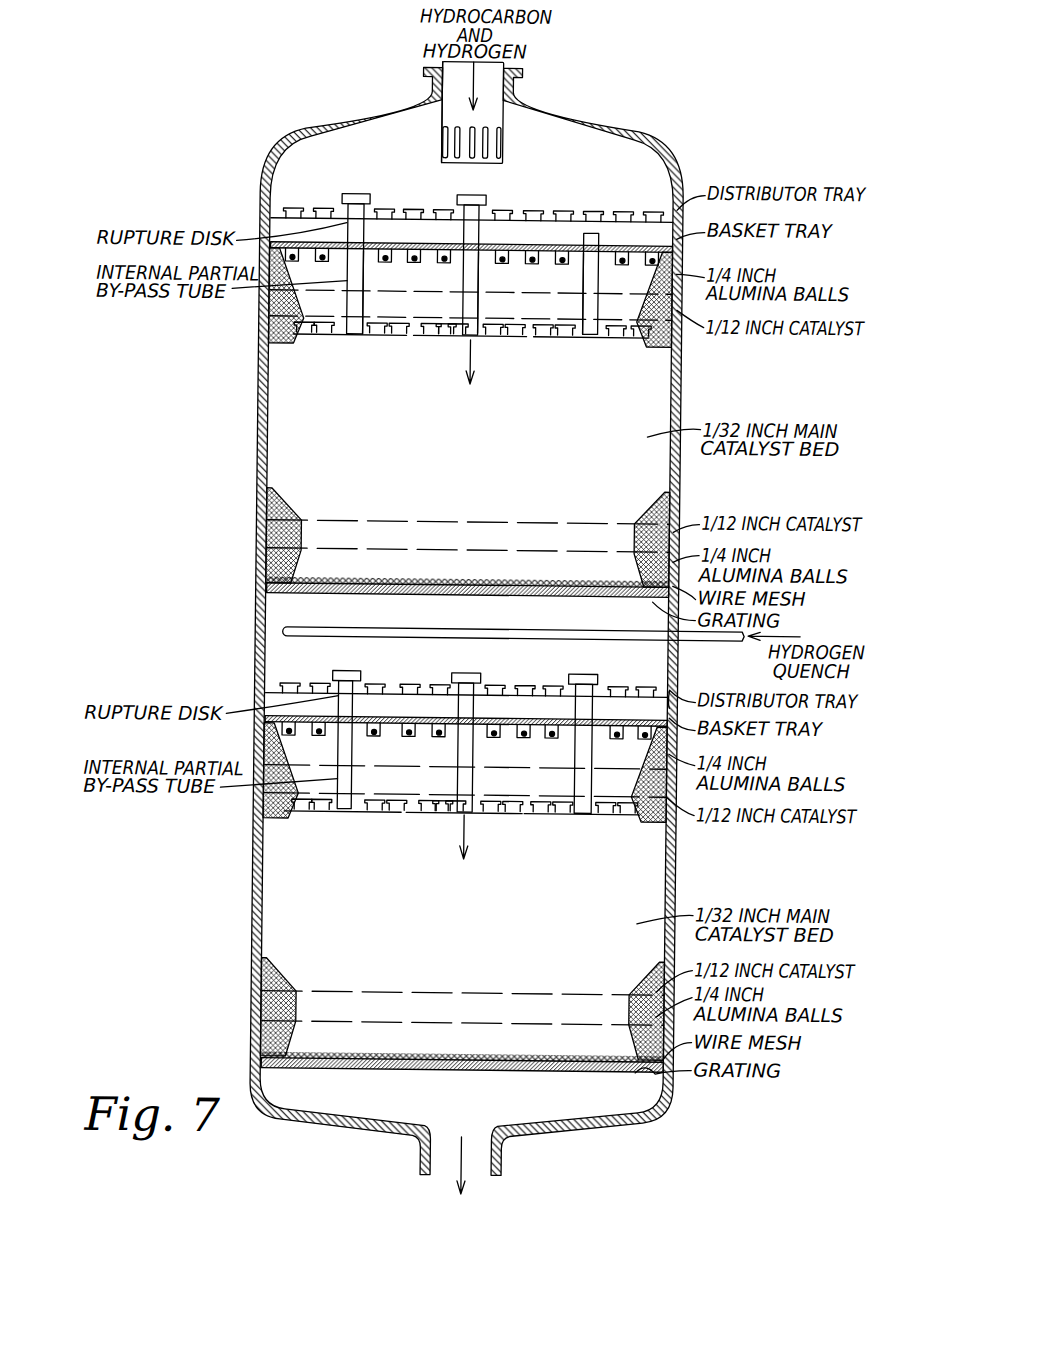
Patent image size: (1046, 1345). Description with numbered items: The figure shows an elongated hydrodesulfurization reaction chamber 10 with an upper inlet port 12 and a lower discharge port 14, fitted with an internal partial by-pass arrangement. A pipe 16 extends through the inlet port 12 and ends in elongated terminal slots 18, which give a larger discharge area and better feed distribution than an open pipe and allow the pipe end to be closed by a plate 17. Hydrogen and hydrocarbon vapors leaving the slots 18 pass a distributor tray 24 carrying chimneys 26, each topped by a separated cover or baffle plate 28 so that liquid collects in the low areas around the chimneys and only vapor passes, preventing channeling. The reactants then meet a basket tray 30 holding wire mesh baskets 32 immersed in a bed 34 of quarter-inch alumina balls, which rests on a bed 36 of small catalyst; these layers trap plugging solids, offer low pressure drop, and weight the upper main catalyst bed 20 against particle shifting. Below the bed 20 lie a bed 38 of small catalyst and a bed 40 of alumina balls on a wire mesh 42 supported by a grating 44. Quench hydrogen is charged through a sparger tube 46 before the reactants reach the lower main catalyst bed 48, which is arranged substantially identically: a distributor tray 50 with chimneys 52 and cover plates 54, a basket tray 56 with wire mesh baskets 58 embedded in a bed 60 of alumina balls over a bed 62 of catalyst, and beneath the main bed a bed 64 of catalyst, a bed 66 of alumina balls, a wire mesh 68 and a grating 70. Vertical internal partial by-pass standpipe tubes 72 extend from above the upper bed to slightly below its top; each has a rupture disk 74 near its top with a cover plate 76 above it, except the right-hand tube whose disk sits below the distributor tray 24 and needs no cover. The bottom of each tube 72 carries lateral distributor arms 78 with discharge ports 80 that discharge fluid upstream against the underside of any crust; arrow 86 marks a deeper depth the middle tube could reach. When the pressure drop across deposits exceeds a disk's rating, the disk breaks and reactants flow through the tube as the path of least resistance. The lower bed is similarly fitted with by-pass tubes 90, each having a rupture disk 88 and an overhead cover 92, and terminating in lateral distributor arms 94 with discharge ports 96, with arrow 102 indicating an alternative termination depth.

The reaction chamber 10 is at (660, 145).
The inlet port 12 is at (511, 91).
The discharge port 14 is at (426, 1162).
The pipe 16 is at (497, 122).
The plate 17 is at (436, 163).
The elongated terminal slots 18 is at (436, 125).
The upper main catalyst bed 20 is at (426, 455).
The distributor tray 24 is at (540, 190).
The chimneys 26 is at (410, 222).
The cover or baffle plate 28 is at (421, 190).
The basket tray 30 is at (548, 248).
The wire mesh baskets 32 is at (530, 262).
The bed of 1/4 inch alumina balls 34 is at (432, 285).
The bed of 1/12 inch catalyst 36 is at (429, 316).
The bed of 1/12 inch catalyst 38 is at (429, 543).
The bed of 1/4 inch alumina balls 40 is at (429, 573).
The wire mesh 42 is at (518, 582).
The grating 44 is at (473, 597).
The sparger tube 46 is at (417, 630).
The lower main catalyst bed 48 is at (427, 930).
The distributor tray 50 is at (510, 703).
The chimneys 52 is at (556, 700).
The cover plate 54 is at (523, 685).
The basket tray 56 is at (395, 718).
The wire mesh baskets 58 is at (368, 740).
The bed of 1/4 inch alumina balls 60 is at (432, 763).
The bed of 1/12 inch catalyst 62 is at (429, 793).
The bed of 1/32 inch catalyst 64 is at (429, 1015).
The bed of 1/4 inch alumina balls 66 is at (429, 1045).
The wire mesh 68 is at (488, 1057).
The grating 70 is at (433, 1070).
The internal partial by-pass standpipe tubes 72 is at (360, 272).
The rupture disk 74 is at (363, 207).
The cover plate 76 is at (346, 195).
The lateral distributor arms 78 is at (312, 337).
The discharge ports 80 is at (332, 324).
The arrow 86 is at (475, 366).
The rupture disks 88 is at (354, 686).
The lower by-pass tubes 90 is at (338, 750).
The overhead cover 92 is at (349, 672).
The lateral distributor arms 94 is at (318, 813).
The discharge ports 96 is at (330, 801).
The arrow 102 is at (470, 842).